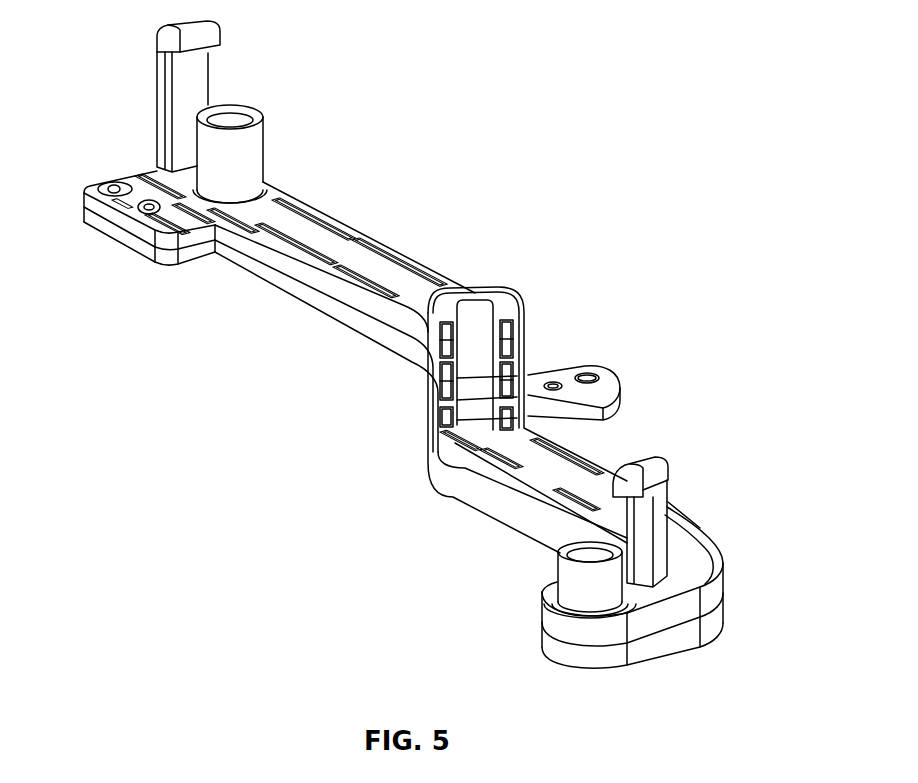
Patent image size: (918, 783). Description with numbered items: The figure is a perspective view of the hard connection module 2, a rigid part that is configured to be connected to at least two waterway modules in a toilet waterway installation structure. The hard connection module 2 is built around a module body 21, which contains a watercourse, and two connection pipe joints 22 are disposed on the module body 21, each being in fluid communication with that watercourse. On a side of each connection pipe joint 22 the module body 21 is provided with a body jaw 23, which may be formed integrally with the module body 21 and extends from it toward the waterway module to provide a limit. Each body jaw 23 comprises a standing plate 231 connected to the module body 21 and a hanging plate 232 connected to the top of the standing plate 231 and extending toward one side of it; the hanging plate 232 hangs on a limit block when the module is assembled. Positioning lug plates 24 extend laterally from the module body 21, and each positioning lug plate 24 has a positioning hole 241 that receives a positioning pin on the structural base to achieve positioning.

The hard connection module 2 is at (462, 248).
The module body 21 is at (373, 343).
The connection pipe joint 22 is at (253, 148).
The body jaw 23 is at (223, 70).
The standing plate 231 is at (155, 128).
The hanging plate 232 is at (170, 48).
The positioning lug plate 24 is at (117, 253).
The positioning hole 241 is at (110, 187).